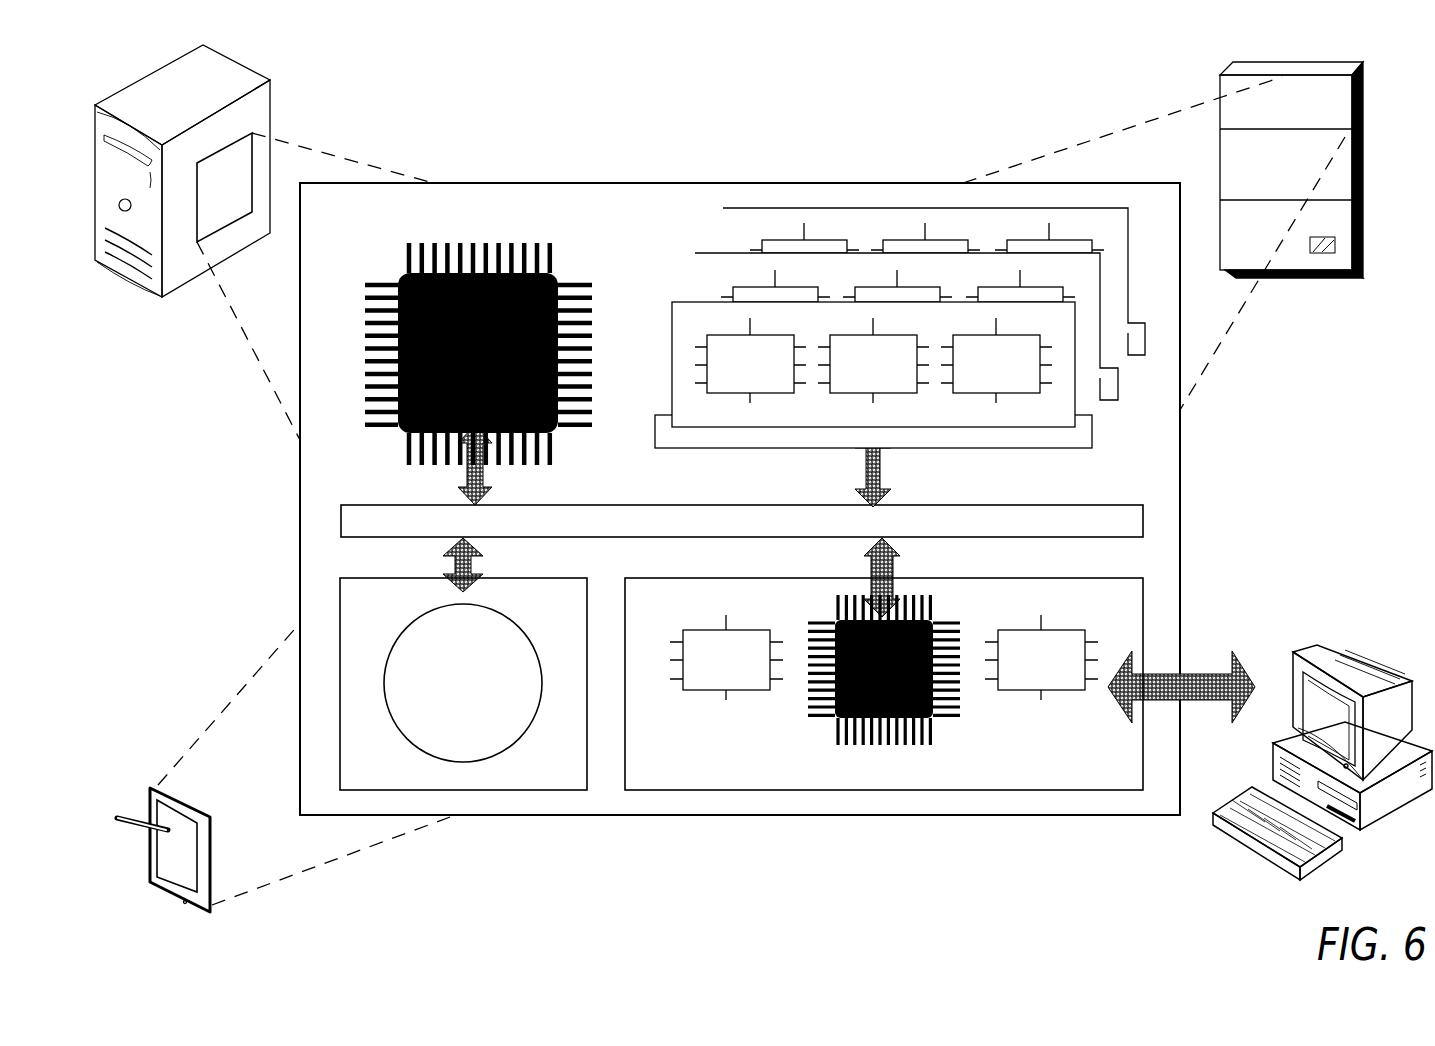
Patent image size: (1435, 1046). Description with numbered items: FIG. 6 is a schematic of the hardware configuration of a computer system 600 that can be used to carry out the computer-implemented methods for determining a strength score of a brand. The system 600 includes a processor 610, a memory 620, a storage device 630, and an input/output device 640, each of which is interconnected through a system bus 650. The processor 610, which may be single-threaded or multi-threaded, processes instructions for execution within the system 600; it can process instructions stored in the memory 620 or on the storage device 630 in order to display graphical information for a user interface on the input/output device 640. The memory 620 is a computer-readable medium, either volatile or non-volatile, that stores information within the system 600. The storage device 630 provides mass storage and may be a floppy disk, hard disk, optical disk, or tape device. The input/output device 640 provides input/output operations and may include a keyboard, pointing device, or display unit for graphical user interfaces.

The computer system 600 is at (530, 112).
The processor 610 is at (343, 375).
The memory 620 is at (1150, 427).
The storage device 630 is at (546, 785).
The input/output device 640 is at (1258, 905).
The system bus 650 is at (742, 521).